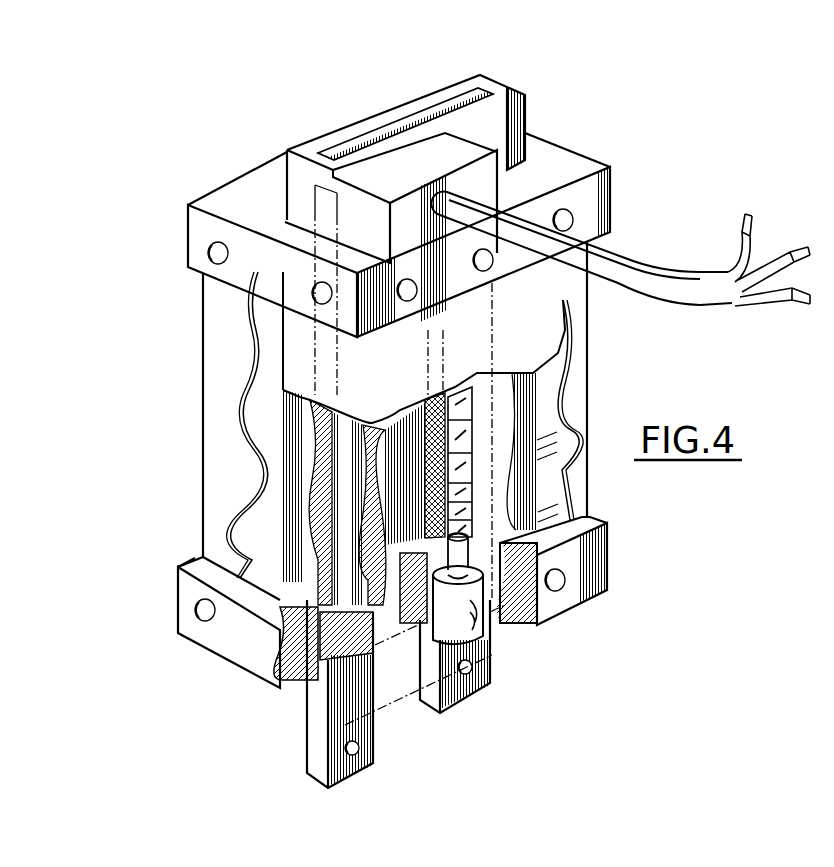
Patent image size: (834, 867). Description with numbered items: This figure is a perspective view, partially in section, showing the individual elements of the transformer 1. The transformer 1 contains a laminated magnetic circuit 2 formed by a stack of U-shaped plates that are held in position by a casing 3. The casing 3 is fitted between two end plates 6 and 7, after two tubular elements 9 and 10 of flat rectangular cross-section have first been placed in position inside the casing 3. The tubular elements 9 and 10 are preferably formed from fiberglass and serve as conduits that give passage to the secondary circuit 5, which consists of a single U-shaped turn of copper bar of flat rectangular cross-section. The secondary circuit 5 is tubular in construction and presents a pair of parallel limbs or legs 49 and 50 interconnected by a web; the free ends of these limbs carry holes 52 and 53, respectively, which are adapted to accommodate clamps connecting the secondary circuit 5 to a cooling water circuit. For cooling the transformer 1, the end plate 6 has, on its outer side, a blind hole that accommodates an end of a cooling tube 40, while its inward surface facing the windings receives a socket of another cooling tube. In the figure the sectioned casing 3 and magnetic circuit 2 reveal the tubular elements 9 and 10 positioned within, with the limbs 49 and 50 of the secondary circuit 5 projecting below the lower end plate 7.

The transformer 1 is at (190, 352).
The laminated magnetic circuit 2 is at (510, 492).
The casing 3 is at (204, 500).
The secondary circuit 5 is at (330, 700).
The end plate 6 is at (247, 181).
The end plate 7 is at (590, 574).
The tubular element 9 is at (318, 484).
The tubular element 10 is at (455, 498).
The cooling tube 40 is at (462, 546).
The limb 49 is at (317, 747).
The limb 50 is at (487, 653).
The hole 52 is at (359, 746).
The hole 53 is at (487, 684).